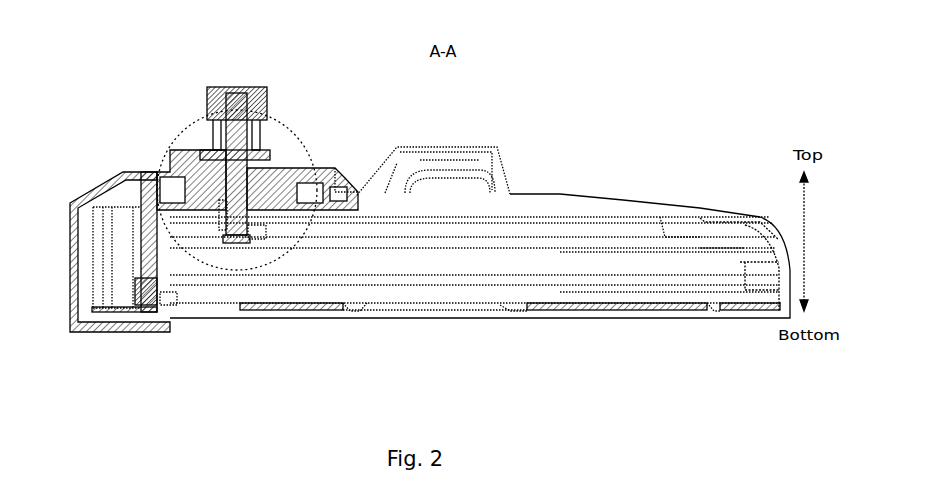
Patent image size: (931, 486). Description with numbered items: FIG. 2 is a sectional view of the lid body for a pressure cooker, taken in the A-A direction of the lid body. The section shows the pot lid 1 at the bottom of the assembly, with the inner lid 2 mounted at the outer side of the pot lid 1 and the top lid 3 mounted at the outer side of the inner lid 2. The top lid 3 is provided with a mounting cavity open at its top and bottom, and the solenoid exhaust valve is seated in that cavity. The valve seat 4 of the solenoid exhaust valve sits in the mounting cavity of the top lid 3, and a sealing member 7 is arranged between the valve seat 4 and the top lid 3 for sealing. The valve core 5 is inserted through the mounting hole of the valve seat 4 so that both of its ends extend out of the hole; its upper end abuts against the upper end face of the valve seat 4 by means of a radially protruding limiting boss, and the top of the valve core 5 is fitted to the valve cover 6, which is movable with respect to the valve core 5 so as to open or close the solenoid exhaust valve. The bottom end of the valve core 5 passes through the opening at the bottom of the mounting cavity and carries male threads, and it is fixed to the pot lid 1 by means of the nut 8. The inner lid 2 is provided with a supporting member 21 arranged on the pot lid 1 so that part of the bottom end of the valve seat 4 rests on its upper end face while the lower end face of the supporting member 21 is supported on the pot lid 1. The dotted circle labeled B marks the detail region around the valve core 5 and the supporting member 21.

The pot lid 1 is at (623, 200).
The inner lid 2 is at (153, 235).
The top lid 3 is at (117, 177).
The valve seat 4 is at (273, 183).
The valve core 5 is at (240, 147).
The valve cover 6 is at (222, 88).
The sealing member 7 is at (187, 157).
The nut 8 is at (253, 238).
The supporting member 21 is at (218, 212).
The detail region B is at (243, 258).